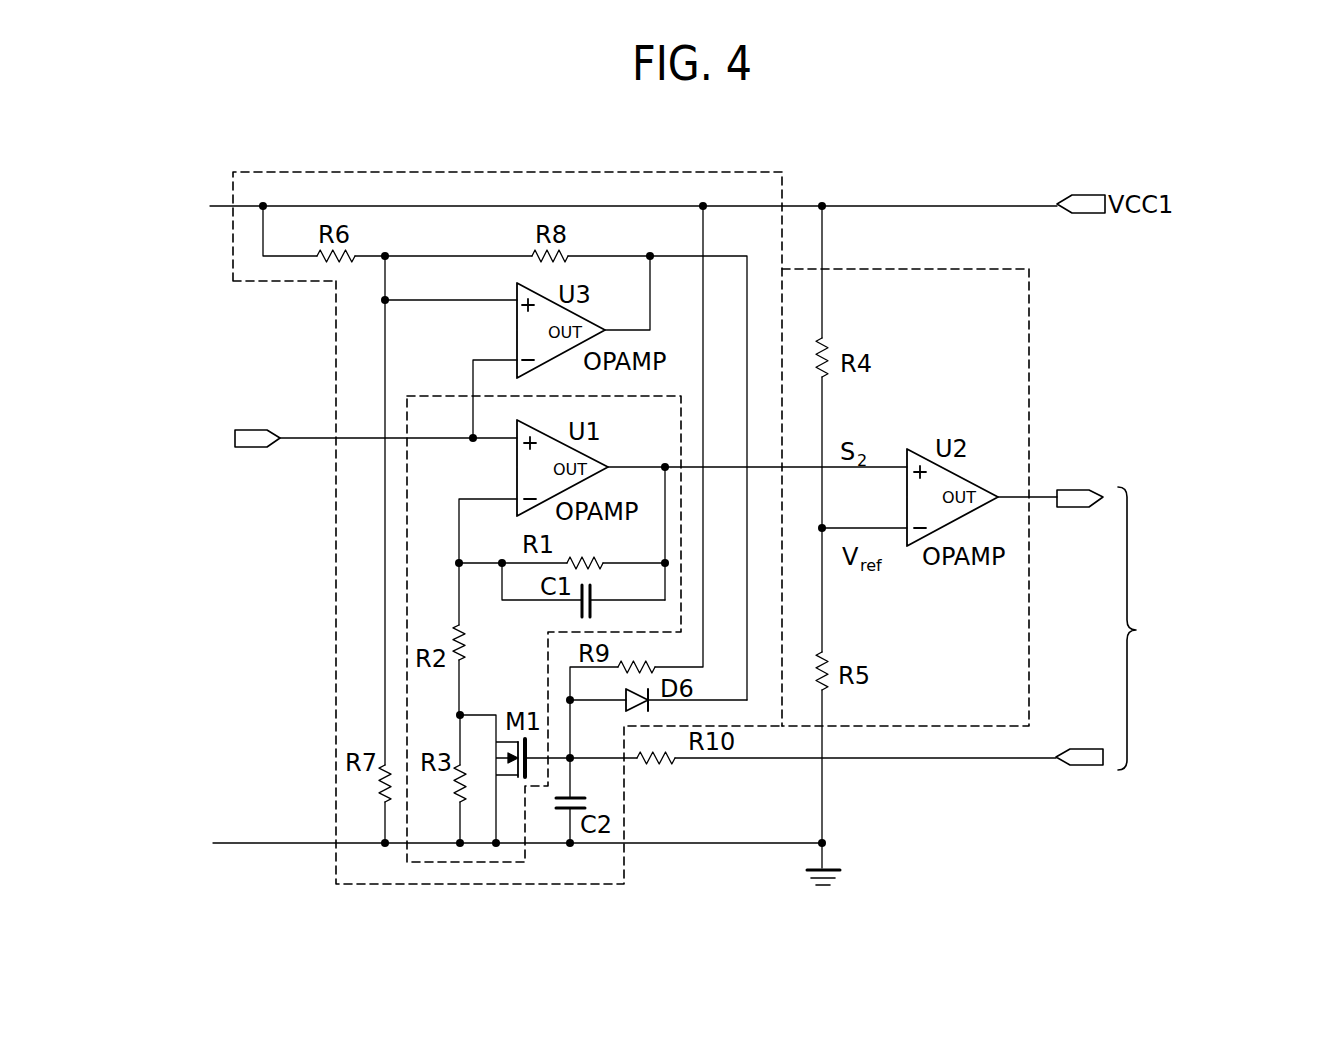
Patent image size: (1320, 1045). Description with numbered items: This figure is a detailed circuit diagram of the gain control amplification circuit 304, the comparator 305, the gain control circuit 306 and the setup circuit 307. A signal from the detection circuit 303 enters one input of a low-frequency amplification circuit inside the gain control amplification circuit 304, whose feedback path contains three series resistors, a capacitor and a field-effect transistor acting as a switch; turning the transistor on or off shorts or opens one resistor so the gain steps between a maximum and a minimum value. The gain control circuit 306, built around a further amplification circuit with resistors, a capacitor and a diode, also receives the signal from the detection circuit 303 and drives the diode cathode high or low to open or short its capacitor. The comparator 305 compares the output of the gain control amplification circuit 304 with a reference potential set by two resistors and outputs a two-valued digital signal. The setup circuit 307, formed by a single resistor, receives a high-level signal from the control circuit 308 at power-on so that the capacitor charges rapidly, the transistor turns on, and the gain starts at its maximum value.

The detection circuit 303 is at (163, 431).
The gain control amplification circuit 304 is at (417, 601).
The comparator 305 is at (1015, 378).
The gain control circuit 306 is at (656, 180).
The setup circuit 307 is at (663, 773).
The control circuit 308 is at (1180, 611).